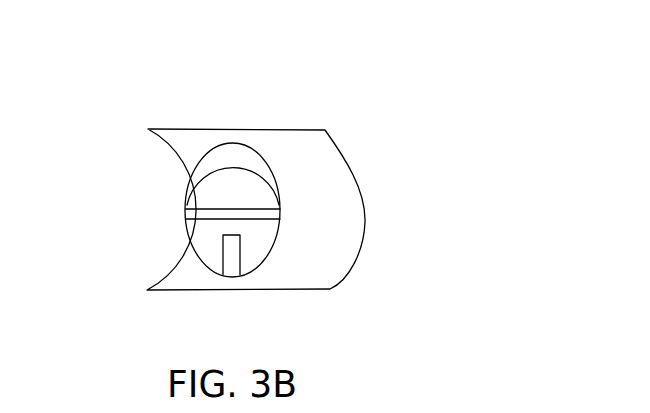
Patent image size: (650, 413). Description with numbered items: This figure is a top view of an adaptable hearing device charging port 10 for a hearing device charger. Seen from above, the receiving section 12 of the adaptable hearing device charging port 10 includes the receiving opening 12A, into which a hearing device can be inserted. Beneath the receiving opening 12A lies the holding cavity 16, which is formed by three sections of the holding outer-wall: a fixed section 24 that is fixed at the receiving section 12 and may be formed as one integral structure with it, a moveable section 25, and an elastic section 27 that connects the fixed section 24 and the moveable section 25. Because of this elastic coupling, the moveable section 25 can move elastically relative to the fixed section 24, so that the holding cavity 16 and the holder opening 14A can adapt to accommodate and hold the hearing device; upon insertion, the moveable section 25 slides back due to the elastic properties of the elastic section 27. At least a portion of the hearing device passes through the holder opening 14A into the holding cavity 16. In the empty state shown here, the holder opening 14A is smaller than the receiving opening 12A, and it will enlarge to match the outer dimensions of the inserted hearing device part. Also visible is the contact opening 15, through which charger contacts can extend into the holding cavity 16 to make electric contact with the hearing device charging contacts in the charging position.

The adaptable hearing device charging port 10 is at (347, 112).
The receiving section 12 is at (153, 238).
The receiving opening 12A is at (283, 218).
The holder opening 14A is at (235, 160).
The holding cavity 16 is at (205, 197).
The moveable section 25 is at (255, 192).
The elastic section 27 is at (279, 208).
The fixed section 24 is at (257, 245).
The contact opening 15 is at (233, 276).